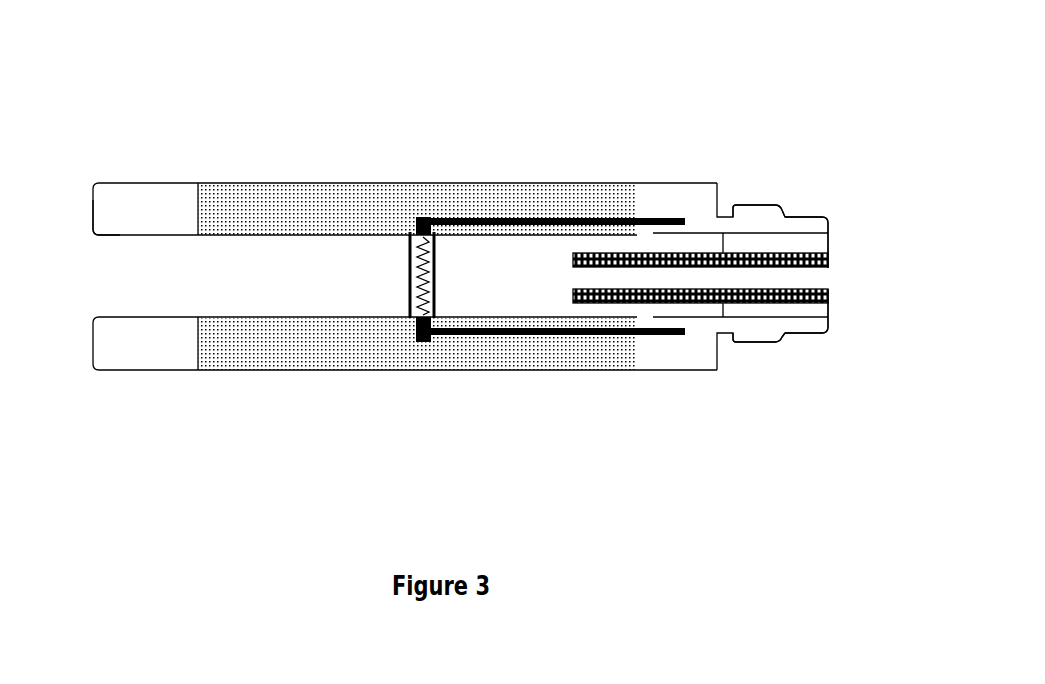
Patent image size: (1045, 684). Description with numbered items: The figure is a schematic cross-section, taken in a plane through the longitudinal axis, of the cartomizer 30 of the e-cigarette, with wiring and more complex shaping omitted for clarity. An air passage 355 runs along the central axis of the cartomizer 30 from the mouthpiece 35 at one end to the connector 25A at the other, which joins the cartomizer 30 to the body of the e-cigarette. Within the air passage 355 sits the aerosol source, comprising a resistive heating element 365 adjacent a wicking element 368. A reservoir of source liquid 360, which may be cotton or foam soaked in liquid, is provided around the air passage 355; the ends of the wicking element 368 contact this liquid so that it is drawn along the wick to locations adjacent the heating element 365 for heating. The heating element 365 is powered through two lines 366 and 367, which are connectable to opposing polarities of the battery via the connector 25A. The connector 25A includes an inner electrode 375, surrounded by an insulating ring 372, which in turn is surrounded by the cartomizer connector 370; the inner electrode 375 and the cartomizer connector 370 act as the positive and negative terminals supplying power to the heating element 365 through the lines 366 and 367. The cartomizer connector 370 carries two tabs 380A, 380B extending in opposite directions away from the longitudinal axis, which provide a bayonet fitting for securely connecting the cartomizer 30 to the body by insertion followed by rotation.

The connector 25A is at (860, 407).
The cartomizer 30 is at (460, 330).
The mouthpiece 35 is at (75, 327).
The air passage 355 is at (174, 206).
The reservoir of source liquid 360 is at (417, 232).
The resistive heating element 365 is at (358, 169).
The power line 366 is at (558, 151).
The power line 367 is at (542, 380).
The wicking element 368 is at (360, 205).
The cartomizer connector 370 is at (750, 209).
The insulating ring 372 is at (842, 176).
The inner electrode 375 is at (700, 380).
The tab 380A is at (705, 173).
The tab 380B is at (707, 390).